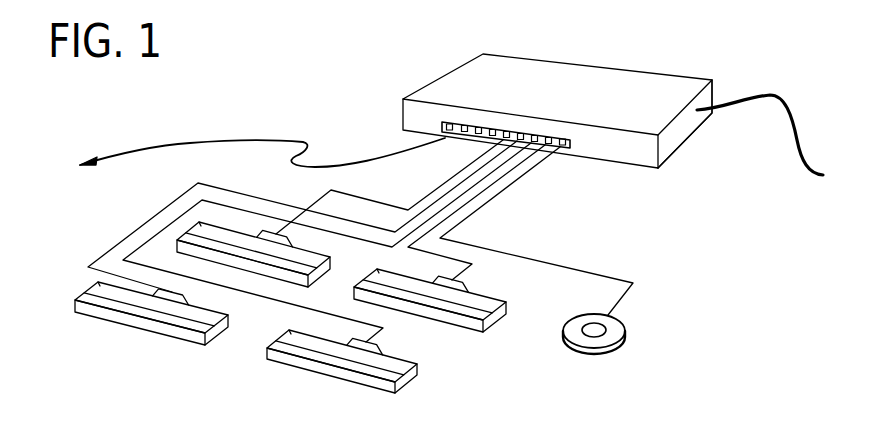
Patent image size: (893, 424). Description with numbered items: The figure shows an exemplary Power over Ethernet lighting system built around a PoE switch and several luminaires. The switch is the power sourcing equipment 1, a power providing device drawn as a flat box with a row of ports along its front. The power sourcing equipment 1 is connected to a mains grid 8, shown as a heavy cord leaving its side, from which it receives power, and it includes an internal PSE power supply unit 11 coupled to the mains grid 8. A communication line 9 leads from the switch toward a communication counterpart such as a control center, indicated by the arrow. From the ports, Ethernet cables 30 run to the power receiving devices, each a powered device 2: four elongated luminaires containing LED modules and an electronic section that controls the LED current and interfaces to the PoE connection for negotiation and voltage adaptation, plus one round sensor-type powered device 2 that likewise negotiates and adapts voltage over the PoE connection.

The power sourcing equipment 1 is at (568, 73).
The PSE power supply unit 11 is at (680, 85).
The mains grid 8 is at (777, 92).
The communication line 9 is at (186, 143).
The Ethernet cables 30 is at (493, 203).
The powered device 2 is at (325, 276).